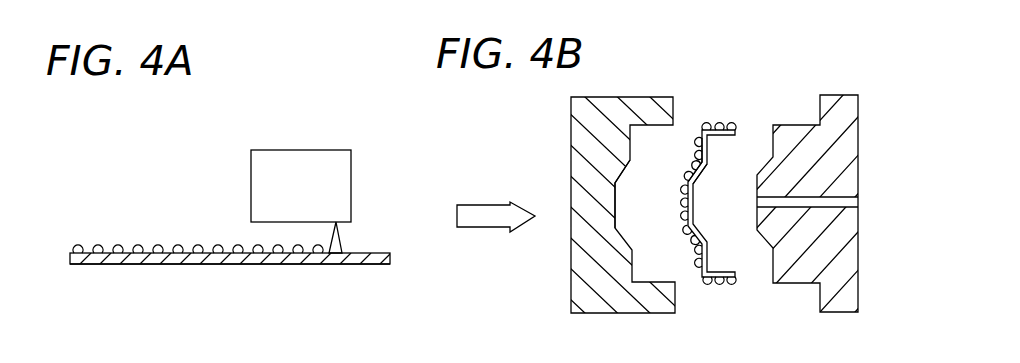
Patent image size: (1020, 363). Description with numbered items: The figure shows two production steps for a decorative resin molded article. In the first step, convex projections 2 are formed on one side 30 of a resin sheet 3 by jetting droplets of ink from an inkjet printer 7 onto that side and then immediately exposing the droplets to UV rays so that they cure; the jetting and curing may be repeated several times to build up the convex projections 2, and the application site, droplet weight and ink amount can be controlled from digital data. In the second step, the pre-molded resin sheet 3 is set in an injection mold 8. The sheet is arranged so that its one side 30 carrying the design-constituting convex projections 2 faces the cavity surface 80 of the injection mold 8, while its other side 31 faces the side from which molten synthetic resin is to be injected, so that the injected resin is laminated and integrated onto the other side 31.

In FIG. 4A, the convex projections 2 is at (141, 250).
In FIG. 4B, the convex projections 2 is at (684, 195).
In FIG. 4A, the resin sheet 3 is at (283, 265).
In FIG. 4B, the resin sheet 3 is at (737, 114).
In FIG. 4A, the inkjet printer 7 is at (314, 150).
In FIG. 4A, the one side 30 is at (371, 249).
In FIG. 4B, the one side 30 is at (690, 157).
In FIG. 4B, the other side 31 is at (710, 179).
In FIG. 4B, the injection mold 8 is at (607, 103).
In FIG. 4B, the cavity surface 80 is at (625, 182).